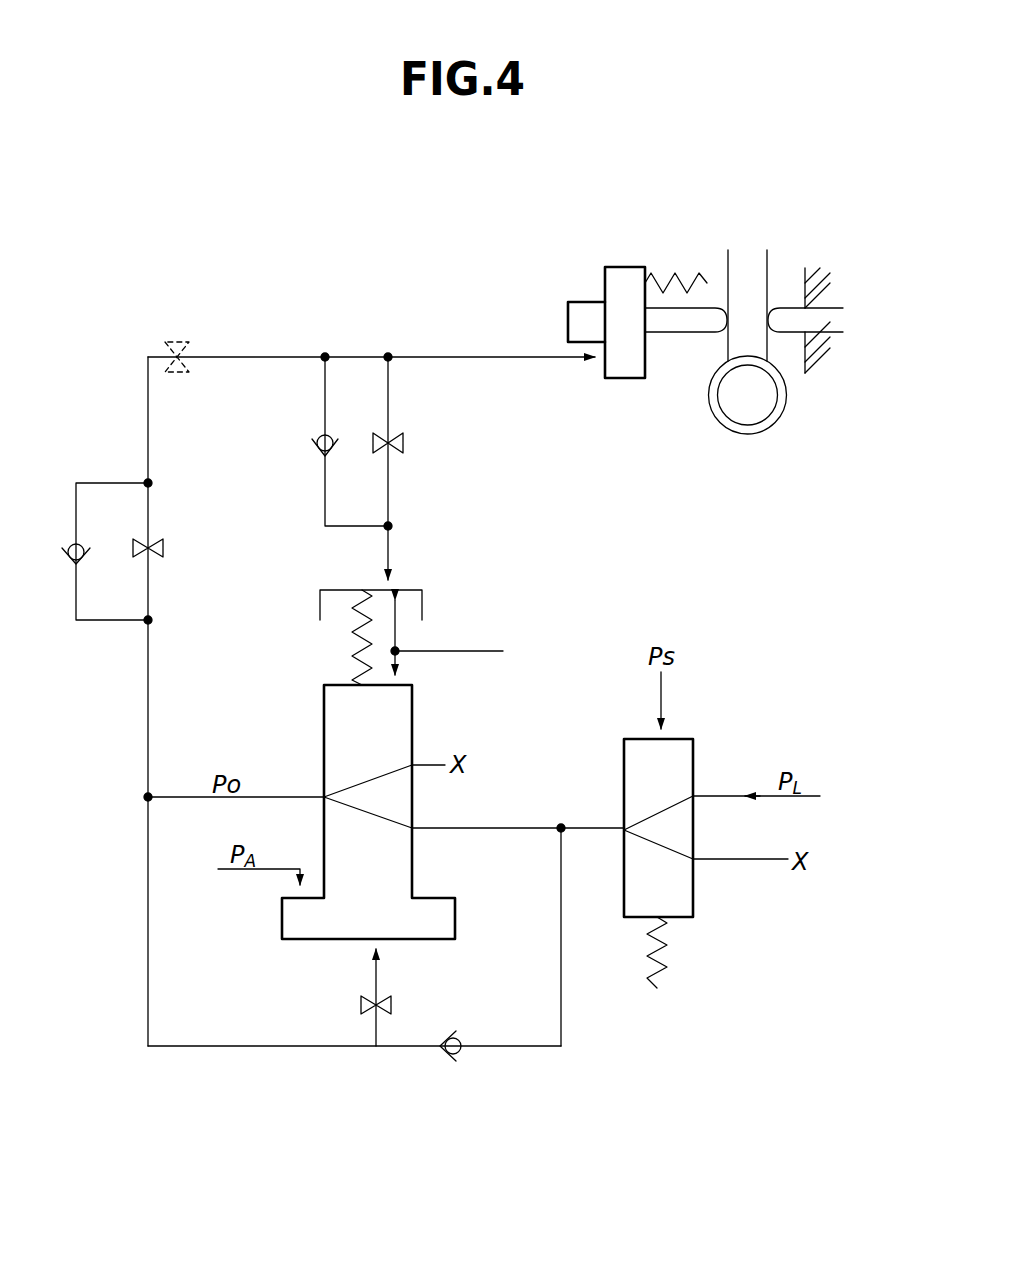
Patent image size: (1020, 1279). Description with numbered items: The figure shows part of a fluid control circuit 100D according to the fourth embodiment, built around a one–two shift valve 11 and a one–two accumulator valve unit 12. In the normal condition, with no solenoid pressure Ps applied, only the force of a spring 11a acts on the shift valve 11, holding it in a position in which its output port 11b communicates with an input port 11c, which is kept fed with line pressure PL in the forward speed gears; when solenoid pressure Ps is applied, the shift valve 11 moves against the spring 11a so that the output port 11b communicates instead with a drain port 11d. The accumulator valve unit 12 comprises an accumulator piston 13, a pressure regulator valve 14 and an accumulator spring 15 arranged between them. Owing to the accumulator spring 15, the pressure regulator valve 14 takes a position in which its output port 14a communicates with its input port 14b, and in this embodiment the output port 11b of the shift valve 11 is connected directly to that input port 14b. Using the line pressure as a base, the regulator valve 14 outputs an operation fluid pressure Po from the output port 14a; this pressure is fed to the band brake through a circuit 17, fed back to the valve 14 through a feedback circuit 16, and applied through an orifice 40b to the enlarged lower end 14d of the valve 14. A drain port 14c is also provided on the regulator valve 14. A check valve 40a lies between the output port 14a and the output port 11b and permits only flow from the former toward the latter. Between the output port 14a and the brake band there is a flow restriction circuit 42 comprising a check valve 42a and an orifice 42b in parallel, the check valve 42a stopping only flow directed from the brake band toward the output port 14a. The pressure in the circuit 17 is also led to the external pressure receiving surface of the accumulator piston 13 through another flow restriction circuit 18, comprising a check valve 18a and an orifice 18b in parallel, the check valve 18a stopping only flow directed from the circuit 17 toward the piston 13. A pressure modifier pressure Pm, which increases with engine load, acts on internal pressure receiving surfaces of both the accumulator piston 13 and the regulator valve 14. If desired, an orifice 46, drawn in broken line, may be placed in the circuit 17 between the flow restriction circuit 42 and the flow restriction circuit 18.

The fluid control circuit 100D is at (644, 195).
The 1–2 shift valve 11 is at (676, 918).
The spring 11a is at (664, 950).
The output port 11b is at (624, 830).
The input port 11c is at (693, 796).
The drain port 11d is at (693, 859).
The 1–2 accumulator valve unit 12 is at (336, 782).
The accumulator piston 13 is at (333, 588).
The pressure regulator valve 14 is at (323, 850).
The output port 14a is at (323, 797).
The input port 14b is at (412, 828).
The drain port 14c is at (412, 765).
The enlarged lower end 14d is at (282, 898).
The accumulator spring 15 is at (354, 634).
The feedback circuit 16 is at (316, 1046).
The circuit 17 is at (222, 357).
The flow restriction circuit 18 is at (432, 468).
The check valve 18a is at (334, 436).
The orifice 18b is at (404, 444).
The check valve 40a is at (460, 1053).
The orifice 40b is at (392, 1005).
The flow restriction circuit 42 is at (174, 525).
The check valve 42a is at (83, 546).
The orifice 42b is at (163, 548).
The orifice 46 is at (178, 340).